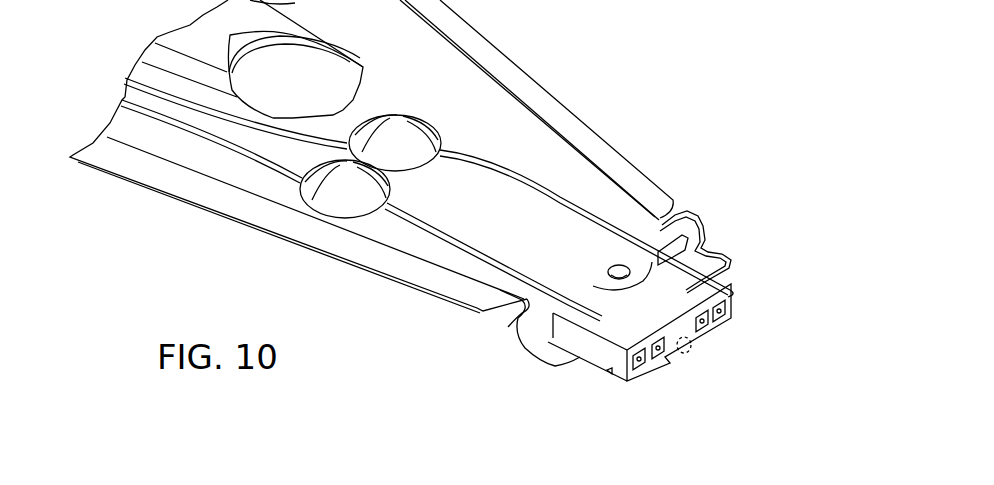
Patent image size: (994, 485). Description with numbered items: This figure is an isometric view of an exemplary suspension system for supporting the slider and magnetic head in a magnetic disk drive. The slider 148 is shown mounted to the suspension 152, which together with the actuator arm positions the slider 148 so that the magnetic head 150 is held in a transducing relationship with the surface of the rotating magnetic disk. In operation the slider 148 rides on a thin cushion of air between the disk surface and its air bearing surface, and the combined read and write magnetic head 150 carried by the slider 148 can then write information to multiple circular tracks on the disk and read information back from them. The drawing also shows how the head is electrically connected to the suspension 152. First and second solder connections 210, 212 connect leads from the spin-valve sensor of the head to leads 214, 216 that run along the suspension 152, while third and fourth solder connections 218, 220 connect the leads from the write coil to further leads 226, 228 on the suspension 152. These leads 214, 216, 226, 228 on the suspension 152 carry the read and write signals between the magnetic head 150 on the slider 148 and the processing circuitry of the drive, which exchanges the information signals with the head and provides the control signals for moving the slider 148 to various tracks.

The suspension 152 is at (541, 76).
The slider 148 is at (577, 370).
The magnetic head 150 is at (693, 357).
The first solder connection 210 is at (630, 367).
The second solder connection 212 is at (727, 312).
The lead 214 is at (410, 222).
The lead 216 is at (590, 207).
The third solder connection 218 is at (658, 355).
The fourth solder connection 220 is at (707, 333).
The lead 226 is at (458, 240).
The lead 228 is at (513, 178).